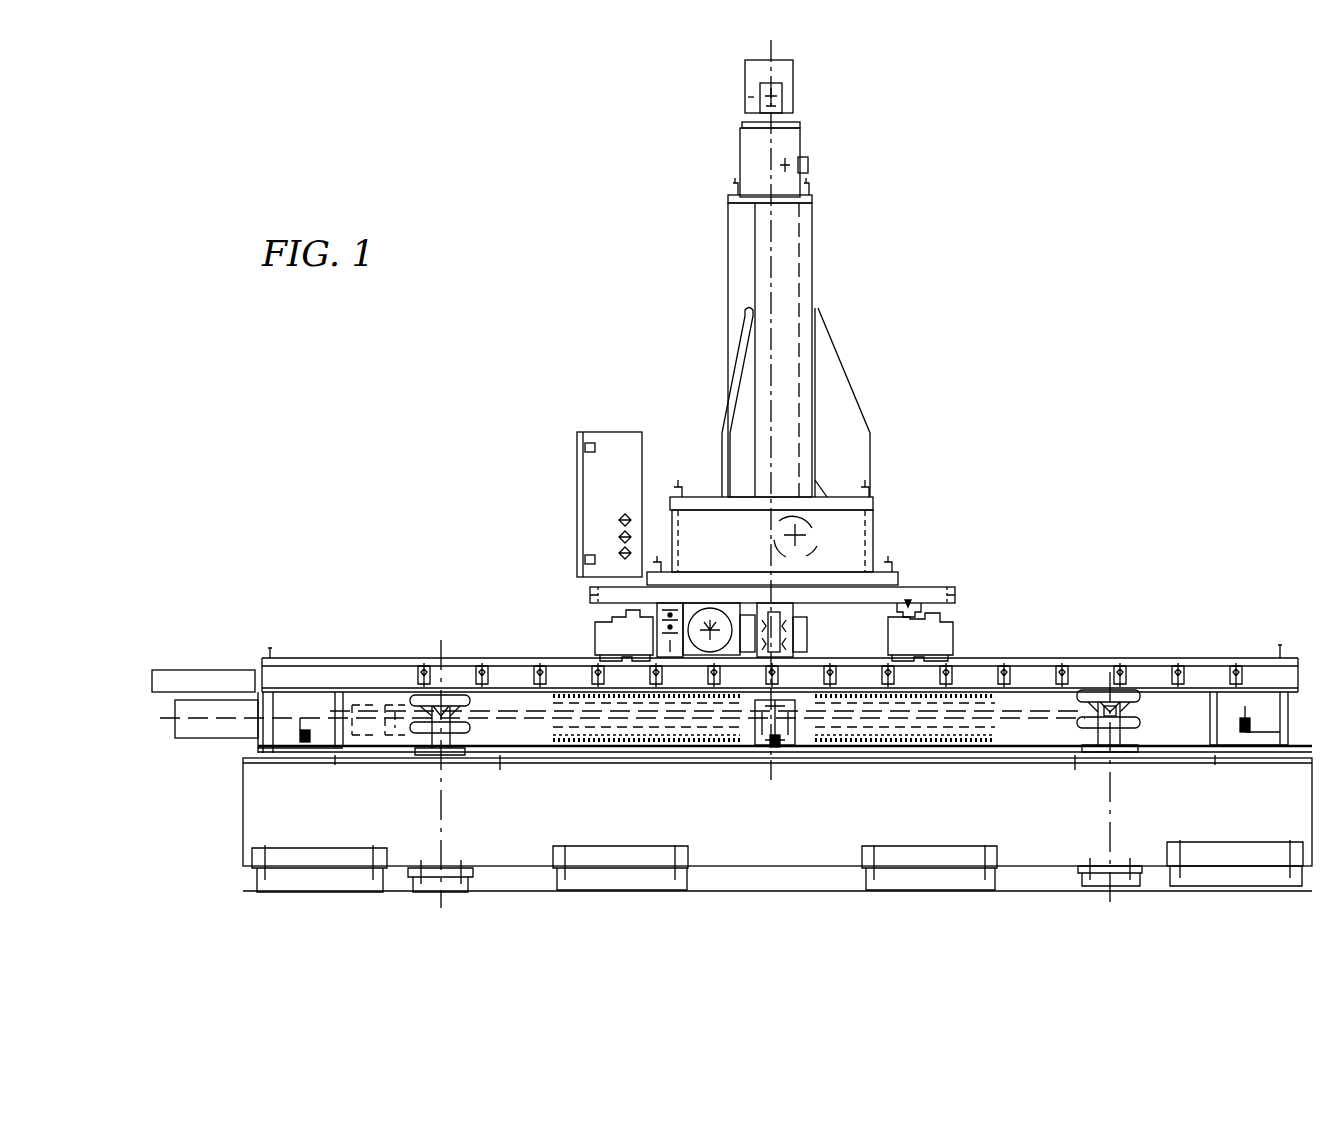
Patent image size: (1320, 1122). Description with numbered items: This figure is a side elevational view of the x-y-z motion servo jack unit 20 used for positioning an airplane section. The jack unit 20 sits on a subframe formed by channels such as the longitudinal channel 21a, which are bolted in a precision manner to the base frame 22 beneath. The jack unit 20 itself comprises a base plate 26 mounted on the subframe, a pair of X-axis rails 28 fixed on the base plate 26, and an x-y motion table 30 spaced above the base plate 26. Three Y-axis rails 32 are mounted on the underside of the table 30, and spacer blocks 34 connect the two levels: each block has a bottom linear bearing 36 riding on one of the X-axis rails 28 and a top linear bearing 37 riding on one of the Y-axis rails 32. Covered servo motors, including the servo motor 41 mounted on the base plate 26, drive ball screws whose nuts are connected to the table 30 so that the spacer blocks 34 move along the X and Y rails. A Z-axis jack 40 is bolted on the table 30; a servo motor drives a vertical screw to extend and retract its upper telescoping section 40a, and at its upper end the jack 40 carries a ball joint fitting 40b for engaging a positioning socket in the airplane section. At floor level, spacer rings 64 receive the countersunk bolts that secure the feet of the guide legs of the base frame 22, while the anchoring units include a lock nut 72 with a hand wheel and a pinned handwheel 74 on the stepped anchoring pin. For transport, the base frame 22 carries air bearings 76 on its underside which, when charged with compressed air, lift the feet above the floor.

The x-y-z motion servo jack unit 20 is at (705, 292).
The longitudinal channel 21a is at (1162, 740).
The base frame 22 is at (243, 818).
The base plate 26 is at (336, 682).
The X-axis rail 28 is at (510, 658).
The x-y motion table 30 is at (940, 587).
The Y-axis rail 32 is at (897, 596).
The spacer block 34 is at (953, 630).
The bottom linear bearing 36 is at (882, 658).
The top linear bearing 37 is at (597, 622).
The Z-axis jack 40 is at (800, 268).
The upper telescoping section 40a is at (790, 142).
The ball joint fitting 40b is at (787, 97).
The servo motor 41 is at (715, 605).
The spacer ring 64 is at (432, 868).
The lock nut 72 is at (1130, 720).
The handwheel 74 is at (1092, 690).
The air bearing 76 is at (255, 876).